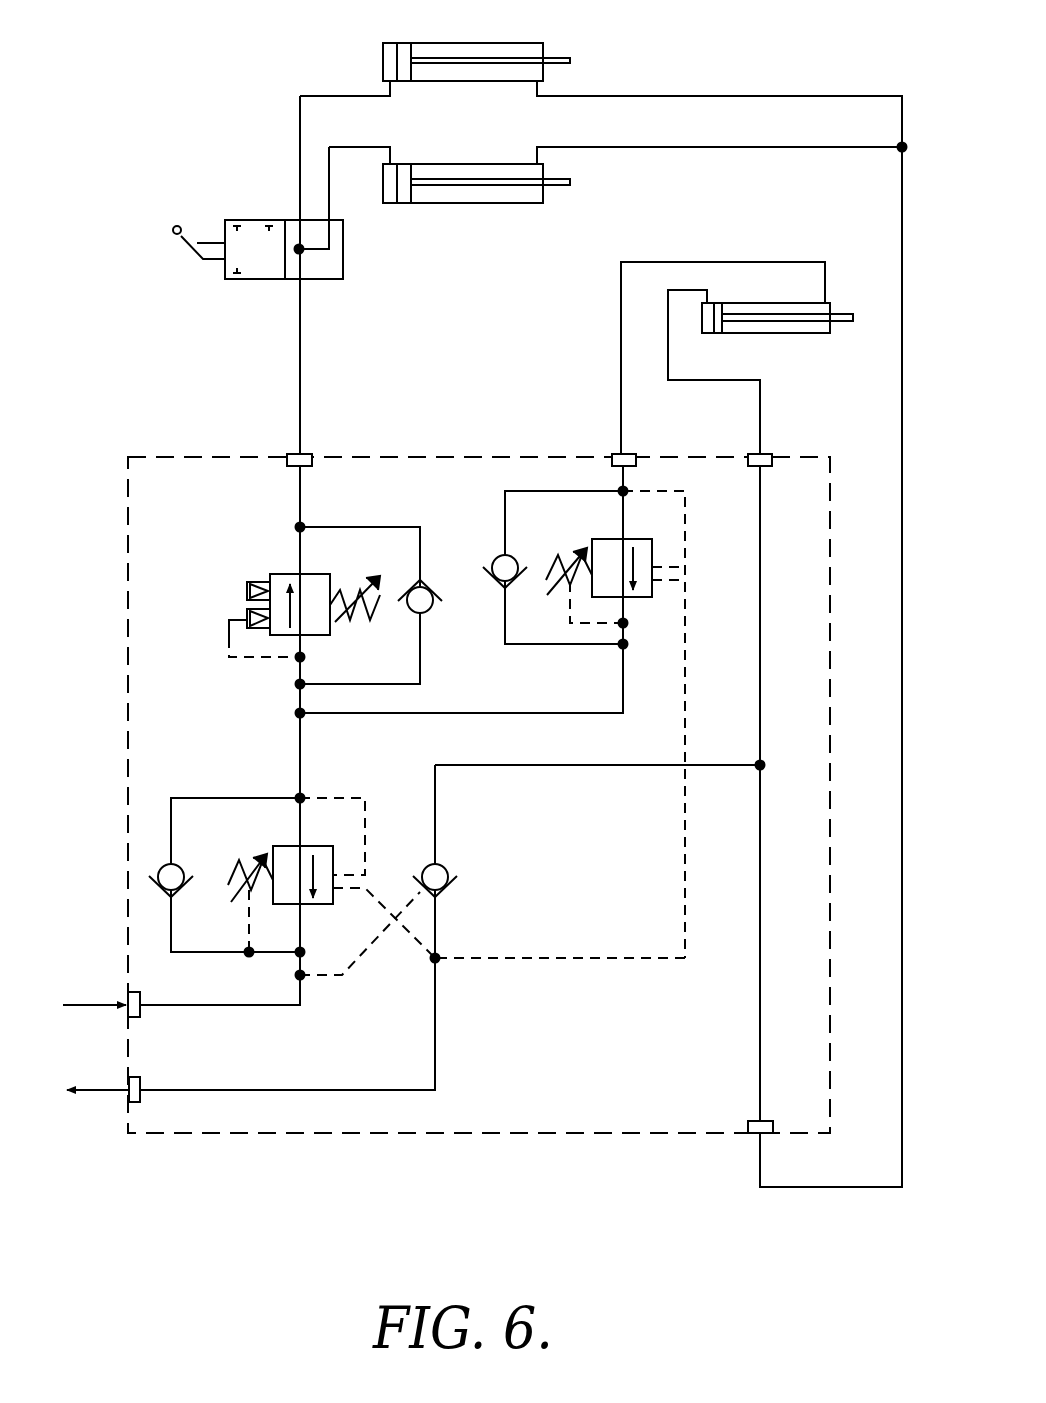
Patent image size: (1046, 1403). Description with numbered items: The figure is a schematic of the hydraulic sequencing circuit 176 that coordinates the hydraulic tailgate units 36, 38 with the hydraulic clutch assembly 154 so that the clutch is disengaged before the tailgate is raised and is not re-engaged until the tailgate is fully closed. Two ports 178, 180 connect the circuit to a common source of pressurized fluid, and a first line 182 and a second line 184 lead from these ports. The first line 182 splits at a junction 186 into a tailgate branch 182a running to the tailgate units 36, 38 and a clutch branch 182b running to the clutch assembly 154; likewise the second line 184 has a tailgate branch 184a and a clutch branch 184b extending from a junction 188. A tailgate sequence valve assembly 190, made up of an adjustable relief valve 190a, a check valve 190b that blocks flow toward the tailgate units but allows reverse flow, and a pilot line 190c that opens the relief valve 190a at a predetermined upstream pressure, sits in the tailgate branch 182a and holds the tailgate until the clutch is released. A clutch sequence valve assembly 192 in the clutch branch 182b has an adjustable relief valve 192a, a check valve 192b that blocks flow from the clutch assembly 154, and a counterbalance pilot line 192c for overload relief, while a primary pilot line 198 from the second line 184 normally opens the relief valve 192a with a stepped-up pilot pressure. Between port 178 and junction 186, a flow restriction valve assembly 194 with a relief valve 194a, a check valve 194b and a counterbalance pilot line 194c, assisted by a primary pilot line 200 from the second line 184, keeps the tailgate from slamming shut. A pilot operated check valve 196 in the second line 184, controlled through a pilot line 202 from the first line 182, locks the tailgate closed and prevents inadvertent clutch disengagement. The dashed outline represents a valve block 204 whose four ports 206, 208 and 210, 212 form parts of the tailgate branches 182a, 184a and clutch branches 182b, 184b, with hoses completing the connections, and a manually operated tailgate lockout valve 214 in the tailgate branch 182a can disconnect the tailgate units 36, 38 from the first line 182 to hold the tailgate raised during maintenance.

The hydraulic tailgate unit 36 is at (465, 205).
The hydraulic tailgate unit 38 is at (500, 43).
The hydraulic clutch assembly 154 is at (767, 335).
The sequencing circuit 176 is at (196, 445).
The port 178 is at (128, 1000).
The port 180 is at (128, 1095).
The first line 182 is at (190, 1005).
The tailgate branch 182a is at (300, 490).
The clutch branch 182b is at (510, 712).
The second line 184 is at (436, 1060).
The tailgate branch 184a is at (760, 1038).
The clutch branch 184b is at (760, 680).
The junction 186 is at (300, 713).
The junction 188 is at (762, 766).
The tailgate sequence valve assembly 190 is at (321, 584).
The adjustable relief valve 190a is at (283, 574).
The check valve 190b is at (425, 613).
The pilot line 190c is at (225, 635).
The clutch sequence valve assembly 192 is at (591, 674).
The adjustable relief valve 192a is at (645, 598).
The check valve 192b is at (490, 560).
The counterbalance pilot line 192c is at (686, 530).
The flow restriction valve assembly 194 is at (228, 847).
The relief valve 194a is at (285, 846).
The check valve 194b is at (160, 868).
The counterbalance pilot line 194c is at (332, 798).
The pilot operated check valve 196 is at (445, 893).
The primary pilot line 198 is at (684, 832).
The primary pilot line 200 is at (375, 895).
The pilot line 202 is at (365, 950).
The valve block 204 is at (512, 1135).
The port 206 is at (305, 455).
The port 208 is at (748, 1136).
The port 210 is at (627, 454).
The port 212 is at (765, 454).
The manually operated tailgate lockout valve 214 is at (258, 220).